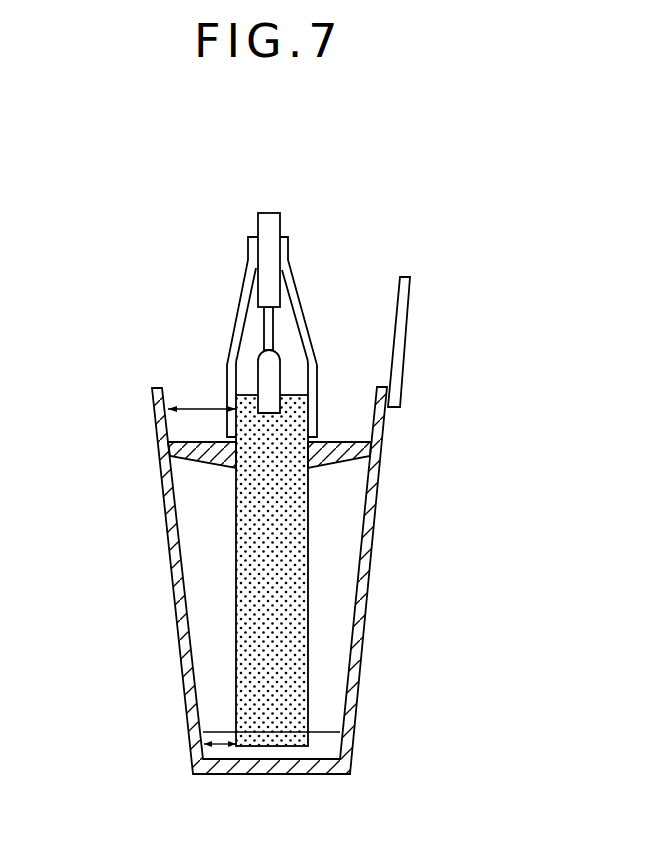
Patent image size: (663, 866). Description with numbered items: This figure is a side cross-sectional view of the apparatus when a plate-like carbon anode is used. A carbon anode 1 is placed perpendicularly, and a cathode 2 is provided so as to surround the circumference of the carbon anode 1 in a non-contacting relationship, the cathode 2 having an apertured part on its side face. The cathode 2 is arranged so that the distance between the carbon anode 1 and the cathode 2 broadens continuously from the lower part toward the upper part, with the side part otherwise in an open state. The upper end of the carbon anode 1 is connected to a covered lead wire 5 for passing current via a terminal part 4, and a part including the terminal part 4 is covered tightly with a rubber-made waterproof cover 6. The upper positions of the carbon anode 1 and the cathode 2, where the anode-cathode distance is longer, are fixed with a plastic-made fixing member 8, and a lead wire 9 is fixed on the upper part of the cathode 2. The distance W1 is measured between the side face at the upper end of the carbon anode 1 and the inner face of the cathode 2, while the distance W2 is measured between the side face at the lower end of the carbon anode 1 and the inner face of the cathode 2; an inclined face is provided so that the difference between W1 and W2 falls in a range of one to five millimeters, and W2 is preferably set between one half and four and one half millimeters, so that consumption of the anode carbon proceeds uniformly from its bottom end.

The carbon anode 1 is at (292, 560).
The cathode 2 is at (362, 667).
The terminal part 4 is at (267, 370).
The covered lead wire 5 is at (272, 226).
The rubber-made waterproof cover 6 is at (302, 305).
The plastic-made fixing member 8 is at (368, 452).
The lead wire 9 is at (401, 330).
The distance between upper end side face of carbon anode and inner face of cathode W1 is at (197, 408).
The distance between lower end side face of carbon anode and inner face of cathode W2 is at (216, 748).